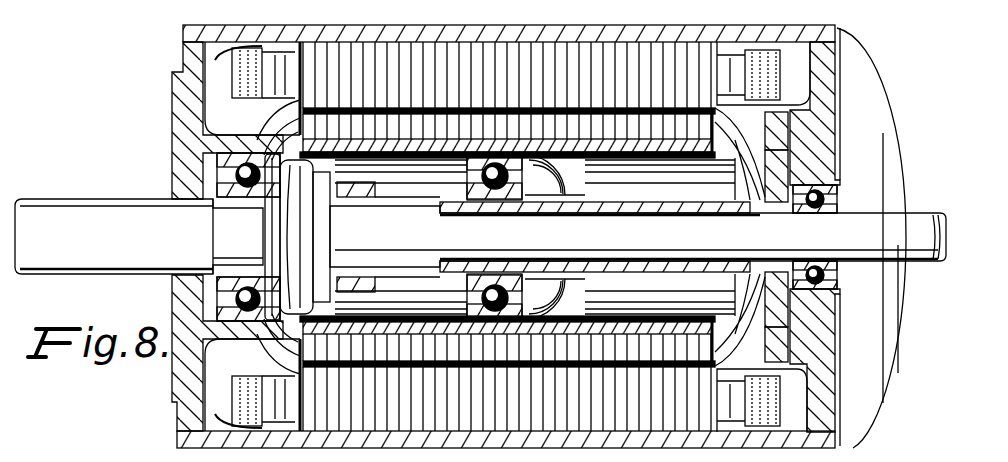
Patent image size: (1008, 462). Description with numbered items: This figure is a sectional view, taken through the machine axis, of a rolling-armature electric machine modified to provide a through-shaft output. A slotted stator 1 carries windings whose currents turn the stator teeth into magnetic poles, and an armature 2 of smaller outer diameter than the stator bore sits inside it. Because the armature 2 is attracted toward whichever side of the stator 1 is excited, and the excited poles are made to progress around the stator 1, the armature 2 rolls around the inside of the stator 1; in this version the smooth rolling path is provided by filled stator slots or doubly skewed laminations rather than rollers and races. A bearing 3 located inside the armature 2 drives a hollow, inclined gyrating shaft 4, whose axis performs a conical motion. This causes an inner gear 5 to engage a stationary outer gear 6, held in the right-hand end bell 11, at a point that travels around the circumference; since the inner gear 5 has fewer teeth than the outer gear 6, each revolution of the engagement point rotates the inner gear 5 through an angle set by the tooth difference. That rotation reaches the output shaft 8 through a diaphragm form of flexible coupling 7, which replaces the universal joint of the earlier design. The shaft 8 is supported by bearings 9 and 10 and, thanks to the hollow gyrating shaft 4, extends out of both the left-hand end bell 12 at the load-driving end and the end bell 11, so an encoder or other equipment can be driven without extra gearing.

The stator 1 is at (500, 53).
The armature 2 is at (665, 347).
The bearing 3 is at (515, 297).
The gyrating shaft 4 is at (703, 268).
The inner gear 5 is at (783, 300).
The outer gear 6 is at (782, 347).
The flexible coupling 7 is at (345, 296).
The shaft 8 is at (107, 213).
The bearing 9 is at (240, 183).
The bearing 10 is at (817, 200).
The right-hand end bell 11 is at (830, 92).
The left-hand end bell 12 is at (177, 148).